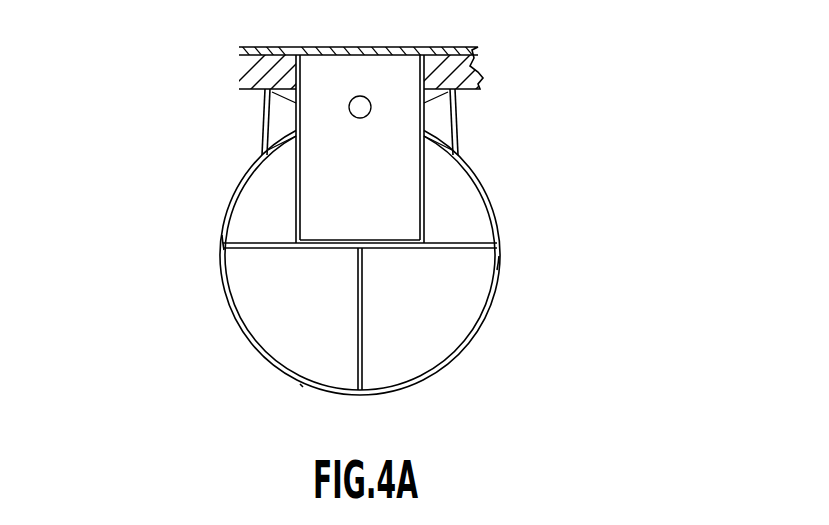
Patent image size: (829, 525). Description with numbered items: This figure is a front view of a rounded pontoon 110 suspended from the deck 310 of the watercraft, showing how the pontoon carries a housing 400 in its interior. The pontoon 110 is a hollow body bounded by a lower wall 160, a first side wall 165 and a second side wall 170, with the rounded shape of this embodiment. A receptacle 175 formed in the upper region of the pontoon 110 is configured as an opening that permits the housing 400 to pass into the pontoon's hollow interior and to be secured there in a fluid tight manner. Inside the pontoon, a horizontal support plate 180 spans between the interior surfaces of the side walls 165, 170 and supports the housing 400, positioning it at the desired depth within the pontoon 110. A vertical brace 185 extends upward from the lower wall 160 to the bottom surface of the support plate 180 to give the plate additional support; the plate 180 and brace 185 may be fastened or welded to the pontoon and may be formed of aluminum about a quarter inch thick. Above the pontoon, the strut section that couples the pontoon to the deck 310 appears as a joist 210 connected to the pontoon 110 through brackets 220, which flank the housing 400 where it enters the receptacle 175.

The pontoon 110 is at (303, 387).
The lower wall 160 is at (397, 392).
The first side wall 165 is at (499, 256).
The second side wall 170 is at (223, 235).
The receptacle 175 is at (452, 127).
The support plate 180 is at (263, 248).
The brace 185 is at (362, 292).
The joist 210 is at (239, 70).
The bracket 220 is at (265, 137).
The deck 310 is at (468, 48).
The housing 400 is at (383, 204).